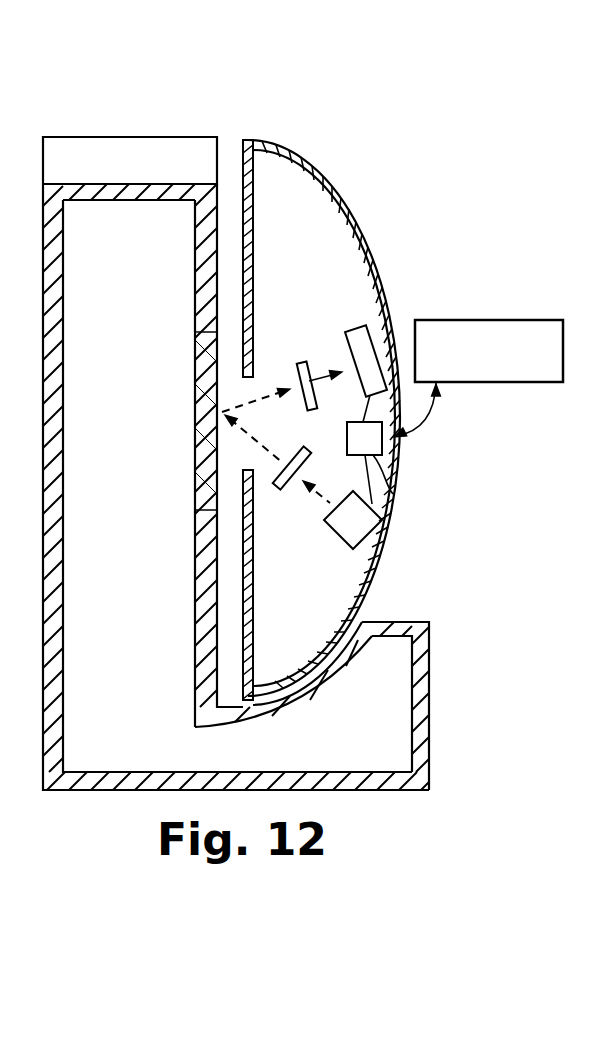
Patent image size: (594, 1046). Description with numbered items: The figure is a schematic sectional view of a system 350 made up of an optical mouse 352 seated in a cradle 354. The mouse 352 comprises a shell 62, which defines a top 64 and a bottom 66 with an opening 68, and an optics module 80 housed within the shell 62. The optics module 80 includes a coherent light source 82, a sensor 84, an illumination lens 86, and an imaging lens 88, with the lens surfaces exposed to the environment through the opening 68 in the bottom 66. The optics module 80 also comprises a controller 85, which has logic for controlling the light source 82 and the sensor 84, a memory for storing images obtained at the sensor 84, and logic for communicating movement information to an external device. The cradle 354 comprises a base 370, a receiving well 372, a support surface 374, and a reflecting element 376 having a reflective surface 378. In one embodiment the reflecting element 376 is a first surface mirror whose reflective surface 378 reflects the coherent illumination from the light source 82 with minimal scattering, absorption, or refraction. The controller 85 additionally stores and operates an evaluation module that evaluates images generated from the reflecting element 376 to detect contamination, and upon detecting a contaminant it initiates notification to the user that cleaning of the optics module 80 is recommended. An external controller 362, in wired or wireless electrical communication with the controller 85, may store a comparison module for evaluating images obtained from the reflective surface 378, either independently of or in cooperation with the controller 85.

The system 350 is at (143, 112).
The cradle 354 is at (175, 137).
The bottom 66 is at (247, 142).
The opening 68 is at (258, 371).
The optical mouse 352 is at (356, 203).
The shell 62 is at (394, 306).
The external controller 362 is at (470, 320).
The optics module 80 is at (346, 377).
The sensor 84 is at (349, 330).
The imaging lens 88 is at (304, 410).
The illumination lens 86 is at (288, 490).
The coherent light source 82 is at (347, 548).
The controller 85 is at (398, 493).
The top 64 is at (402, 457).
The reflecting element 376 is at (186, 417).
The reflective surface 378 is at (196, 452).
The support surface 374 is at (196, 611).
The base 370 is at (430, 705).
The receiving well 372 is at (323, 673).